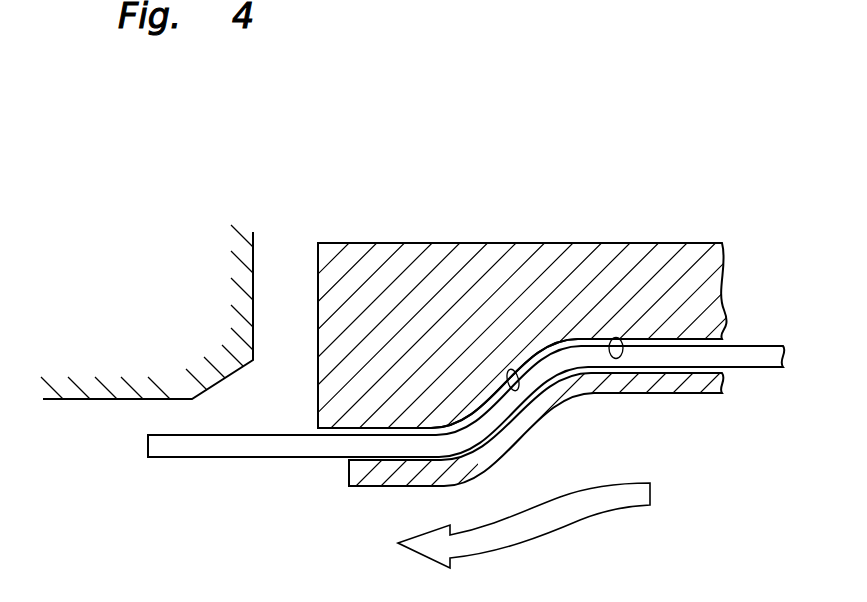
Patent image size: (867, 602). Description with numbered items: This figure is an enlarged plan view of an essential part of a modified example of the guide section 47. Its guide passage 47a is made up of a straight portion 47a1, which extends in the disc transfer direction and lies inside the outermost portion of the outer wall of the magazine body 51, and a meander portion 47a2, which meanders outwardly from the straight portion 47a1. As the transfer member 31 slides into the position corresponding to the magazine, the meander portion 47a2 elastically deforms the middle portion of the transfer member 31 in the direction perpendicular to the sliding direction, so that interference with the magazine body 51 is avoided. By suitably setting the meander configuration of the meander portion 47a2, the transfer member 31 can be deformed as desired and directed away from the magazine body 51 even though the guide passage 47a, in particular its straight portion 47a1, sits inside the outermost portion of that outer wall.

The transfer member 31 is at (263, 457).
The guide section 47 is at (653, 243).
The guide passage 47a is at (630, 185).
The straight portion 47a1 is at (620, 337).
The meander portion 47a2 is at (507, 369).
The magazine body 51 is at (253, 287).